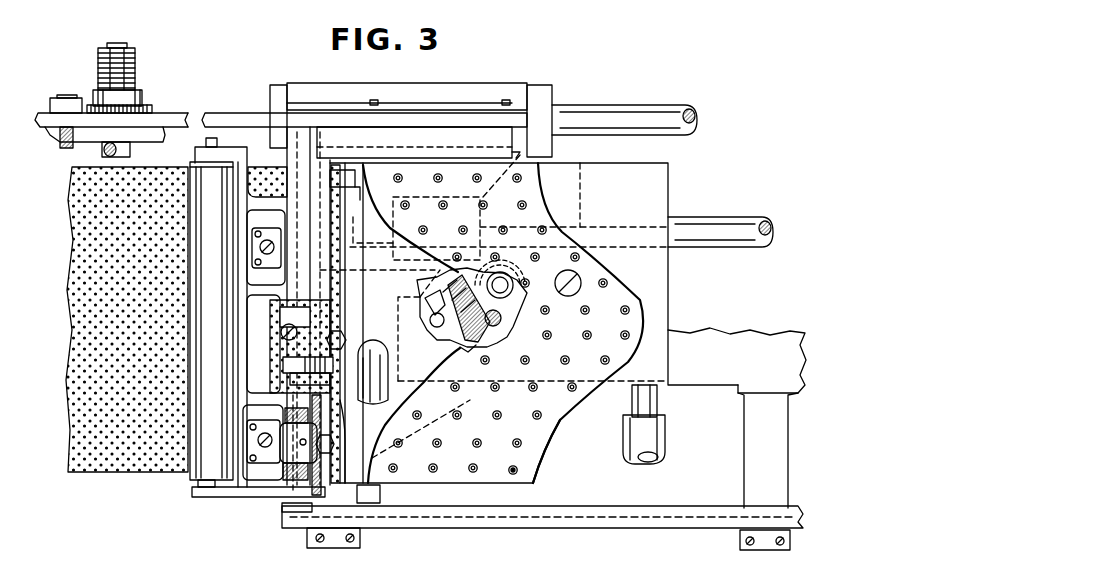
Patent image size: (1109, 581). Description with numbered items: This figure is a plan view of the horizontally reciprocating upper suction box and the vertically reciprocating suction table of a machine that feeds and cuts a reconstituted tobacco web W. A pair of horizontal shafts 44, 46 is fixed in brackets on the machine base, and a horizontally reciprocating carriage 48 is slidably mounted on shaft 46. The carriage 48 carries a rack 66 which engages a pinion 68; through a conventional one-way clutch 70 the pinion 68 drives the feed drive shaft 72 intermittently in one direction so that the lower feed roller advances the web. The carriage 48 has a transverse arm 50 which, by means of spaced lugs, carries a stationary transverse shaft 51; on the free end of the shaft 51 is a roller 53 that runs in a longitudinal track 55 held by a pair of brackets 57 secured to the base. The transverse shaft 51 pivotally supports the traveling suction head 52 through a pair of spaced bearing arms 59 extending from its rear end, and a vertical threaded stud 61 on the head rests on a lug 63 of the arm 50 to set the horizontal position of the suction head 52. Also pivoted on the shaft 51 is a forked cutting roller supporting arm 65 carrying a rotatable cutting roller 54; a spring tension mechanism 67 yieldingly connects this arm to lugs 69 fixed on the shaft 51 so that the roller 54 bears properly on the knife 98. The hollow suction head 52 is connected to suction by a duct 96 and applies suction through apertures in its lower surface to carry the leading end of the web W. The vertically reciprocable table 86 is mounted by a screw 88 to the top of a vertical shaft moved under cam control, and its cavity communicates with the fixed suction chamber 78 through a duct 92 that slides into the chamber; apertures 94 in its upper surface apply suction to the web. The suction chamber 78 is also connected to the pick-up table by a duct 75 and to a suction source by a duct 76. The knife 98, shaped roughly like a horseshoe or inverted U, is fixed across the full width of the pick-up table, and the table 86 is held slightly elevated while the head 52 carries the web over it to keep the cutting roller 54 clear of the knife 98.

The reconstituted tobacco web W is at (130, 468).
The horizontal shaft 44 is at (735, 218).
The horizontal shaft 46 is at (630, 113).
The horizontally reciprocating carriage 48 is at (552, 94).
The transverse arm 50 is at (320, 135).
The transverse shaft 51 is at (290, 361).
The traveling suction head 52 is at (419, 394).
The roller 53 is at (312, 504).
The cutting roller 54 is at (200, 460).
The longitudinal track 55 is at (632, 507).
The bracket 57 is at (380, 497).
The bearing arm 59 is at (340, 190).
The threaded stud 61 is at (340, 333).
The lug 63 is at (343, 307).
The cutting roller supporting arm 65 is at (235, 490).
The rack 66 is at (157, 115).
The spring tension mechanism 67 is at (254, 236).
The pinion 68 is at (152, 105).
The lug 69 is at (334, 437).
The one-way clutch 70 is at (97, 62).
The feed drive shaft 72 is at (131, 150).
The duct 75 is at (433, 323).
The duct 76 is at (660, 445).
The suction chamber 78 is at (668, 294).
The vertically reciprocable table 86 is at (543, 433).
The screw 88 is at (579, 278).
The duct 92 is at (512, 288).
The aperture 94 is at (518, 472).
The duct 96 is at (384, 372).
The knife 98 is at (470, 351).